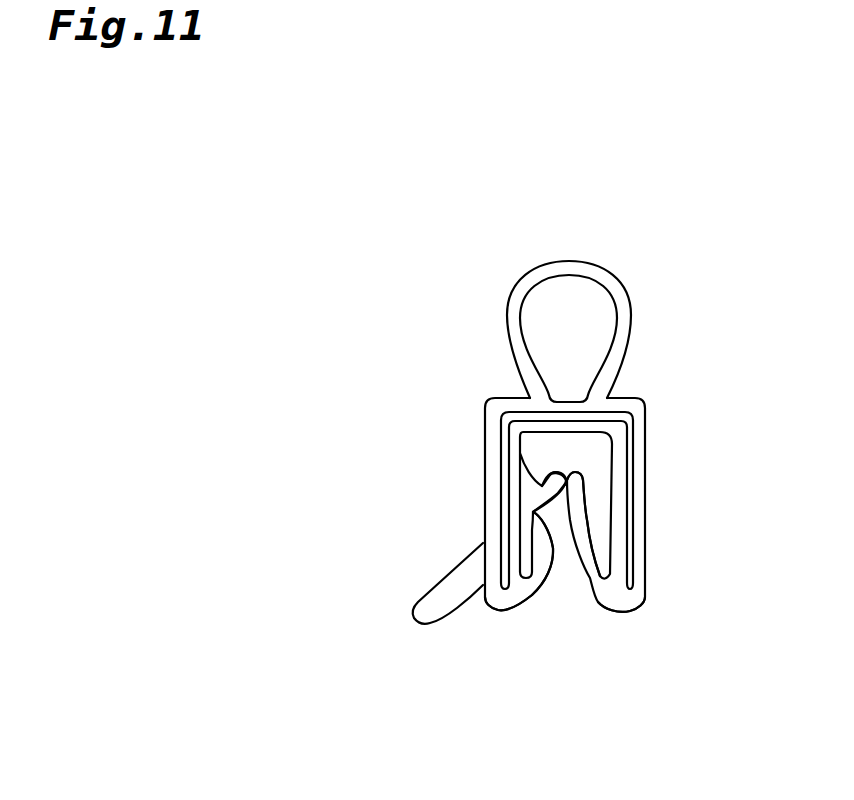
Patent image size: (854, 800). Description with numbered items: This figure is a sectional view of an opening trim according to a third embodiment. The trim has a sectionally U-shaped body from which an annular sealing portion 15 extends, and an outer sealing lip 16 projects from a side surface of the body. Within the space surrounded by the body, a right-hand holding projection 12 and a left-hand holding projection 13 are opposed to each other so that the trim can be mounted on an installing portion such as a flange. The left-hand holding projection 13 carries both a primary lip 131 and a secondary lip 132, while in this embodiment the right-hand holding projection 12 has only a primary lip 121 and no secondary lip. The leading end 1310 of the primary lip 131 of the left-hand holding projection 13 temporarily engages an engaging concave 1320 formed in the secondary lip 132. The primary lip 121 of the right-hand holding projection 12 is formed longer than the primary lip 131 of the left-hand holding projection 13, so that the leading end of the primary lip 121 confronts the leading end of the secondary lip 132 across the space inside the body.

The right-hand holding projection 12 is at (603, 622).
The left-hand holding projection 13 is at (541, 628).
The annular sealing portion 15 is at (578, 273).
The outer sealing lip 16 is at (425, 614).
The primary lip 121 is at (587, 520).
The primary lip 131 is at (540, 556).
The secondary lip 132 is at (548, 480).
The leading end 1310 is at (530, 507).
The engaging concave 1320 is at (541, 487).